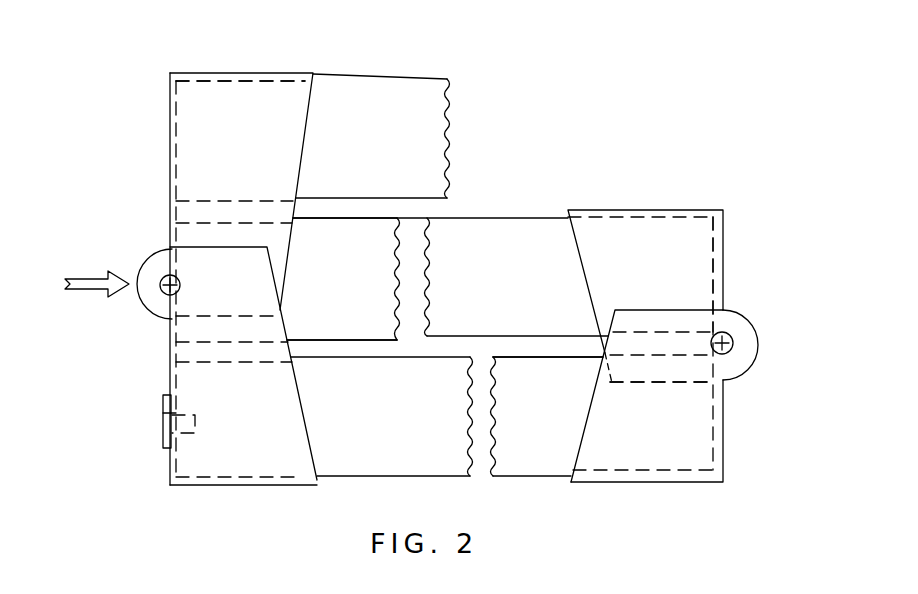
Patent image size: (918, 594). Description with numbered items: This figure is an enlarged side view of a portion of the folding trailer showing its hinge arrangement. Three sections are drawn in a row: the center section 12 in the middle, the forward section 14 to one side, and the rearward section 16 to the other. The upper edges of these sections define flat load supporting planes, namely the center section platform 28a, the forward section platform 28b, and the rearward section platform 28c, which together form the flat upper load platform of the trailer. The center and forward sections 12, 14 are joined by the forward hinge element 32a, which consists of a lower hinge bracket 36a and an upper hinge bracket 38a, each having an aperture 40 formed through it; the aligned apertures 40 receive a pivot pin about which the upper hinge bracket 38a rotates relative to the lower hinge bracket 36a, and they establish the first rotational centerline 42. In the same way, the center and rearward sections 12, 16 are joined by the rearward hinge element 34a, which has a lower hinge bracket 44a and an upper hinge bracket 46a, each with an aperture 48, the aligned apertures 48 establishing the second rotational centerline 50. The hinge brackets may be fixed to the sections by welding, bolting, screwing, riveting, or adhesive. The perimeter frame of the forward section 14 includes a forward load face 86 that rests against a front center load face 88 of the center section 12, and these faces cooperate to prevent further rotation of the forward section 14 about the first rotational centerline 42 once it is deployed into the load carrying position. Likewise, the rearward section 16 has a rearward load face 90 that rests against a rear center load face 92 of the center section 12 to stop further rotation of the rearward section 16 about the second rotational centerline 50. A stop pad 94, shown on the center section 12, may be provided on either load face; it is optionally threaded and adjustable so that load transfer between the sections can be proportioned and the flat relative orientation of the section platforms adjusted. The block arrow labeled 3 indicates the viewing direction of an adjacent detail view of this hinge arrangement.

The section line for the view of FIG. 3 is at (75, 284).
The center section 12 is at (360, 456).
The forward section 14 is at (423, 112).
The rearward section 16 is at (518, 233).
The center section platform 28a is at (519, 353).
The forward section platform 28b is at (412, 207).
The rearward section platform 28c is at (366, 345).
The forward hinge element 32a is at (167, 352).
The rearward hinge element 34a is at (744, 286).
The lower hinge bracket 36a is at (186, 389).
The upper hinge bracket 38a is at (183, 147).
The aperture 40 is at (157, 316).
The first rotational centerline 42 is at (168, 274).
The lower hinge bracket 44a is at (727, 434).
The upper hinge bracket 46a is at (688, 230).
The aperture 48 is at (733, 351).
The second rotational centerline 50 is at (731, 338).
The forward load face 86 is at (173, 113).
The front center load face 88 is at (150, 422).
The rearward load face 90 is at (717, 260).
The rear center load face 92 is at (723, 406).
The stop pad 94 is at (160, 447).